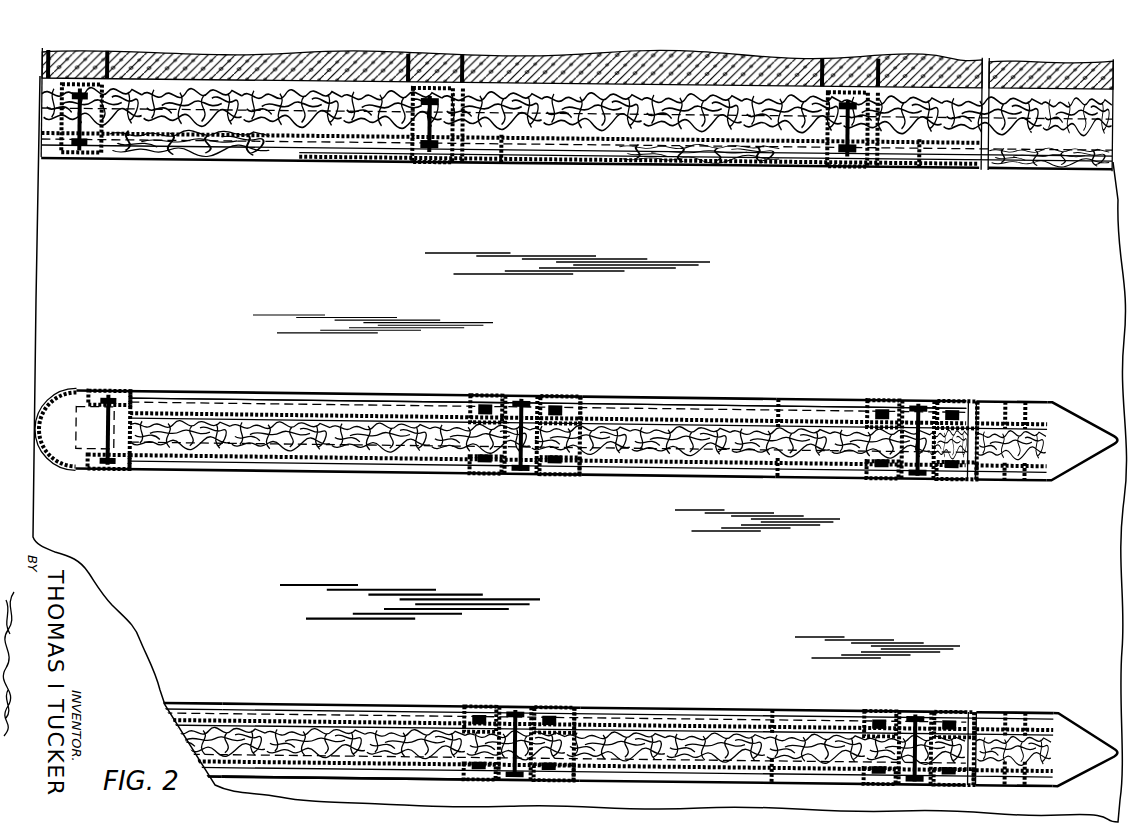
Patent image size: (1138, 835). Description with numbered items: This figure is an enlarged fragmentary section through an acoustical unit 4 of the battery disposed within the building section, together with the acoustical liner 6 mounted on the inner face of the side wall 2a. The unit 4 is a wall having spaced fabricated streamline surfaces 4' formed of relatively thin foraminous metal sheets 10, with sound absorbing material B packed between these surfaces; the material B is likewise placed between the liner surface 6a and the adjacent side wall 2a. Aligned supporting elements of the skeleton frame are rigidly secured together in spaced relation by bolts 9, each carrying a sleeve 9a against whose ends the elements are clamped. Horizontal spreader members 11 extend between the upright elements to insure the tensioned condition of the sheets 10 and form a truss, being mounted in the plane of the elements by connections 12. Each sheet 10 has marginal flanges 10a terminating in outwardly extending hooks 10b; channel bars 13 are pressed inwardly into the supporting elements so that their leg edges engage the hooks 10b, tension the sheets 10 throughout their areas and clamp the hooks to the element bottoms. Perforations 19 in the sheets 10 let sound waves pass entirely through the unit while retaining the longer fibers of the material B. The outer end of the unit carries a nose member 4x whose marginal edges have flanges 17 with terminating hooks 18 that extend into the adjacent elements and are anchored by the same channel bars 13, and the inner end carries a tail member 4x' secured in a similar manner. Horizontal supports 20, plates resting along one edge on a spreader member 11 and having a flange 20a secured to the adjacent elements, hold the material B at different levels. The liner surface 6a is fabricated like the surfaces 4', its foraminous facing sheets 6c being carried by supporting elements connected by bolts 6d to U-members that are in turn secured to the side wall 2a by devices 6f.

The side wall 2a is at (66, 50).
The foraminous facing sheet 6c is at (50, 80).
The securing device 6f is at (826, 60).
The bolt 6d is at (432, 168).
The acoustical liner 6 is at (348, 179).
The liner surface 6a is at (200, 162).
The horizontal support 20 is at (143, 162).
The flange 20a is at (263, 164).
The perforation 19 is at (724, 178).
The nose member 4x is at (74, 416).
The hook 18 is at (94, 390).
The flange 17 is at (92, 469).
The channel bar 13 is at (126, 390).
The foraminous facing sheet 10 is at (334, 388).
The hook 10b is at (516, 394).
The flange 10a is at (556, 395).
The sleeve 9a is at (484, 468).
The bolt 9 is at (524, 470).
The connection 12 is at (545, 805).
The acoustical unit 4 is at (273, 548).
The streamline surface 4' is at (594, 591).
The sound absorbing material B is at (318, 466).
The spreader member 11 is at (438, 468).
The tail member 4x' is at (1081, 594).